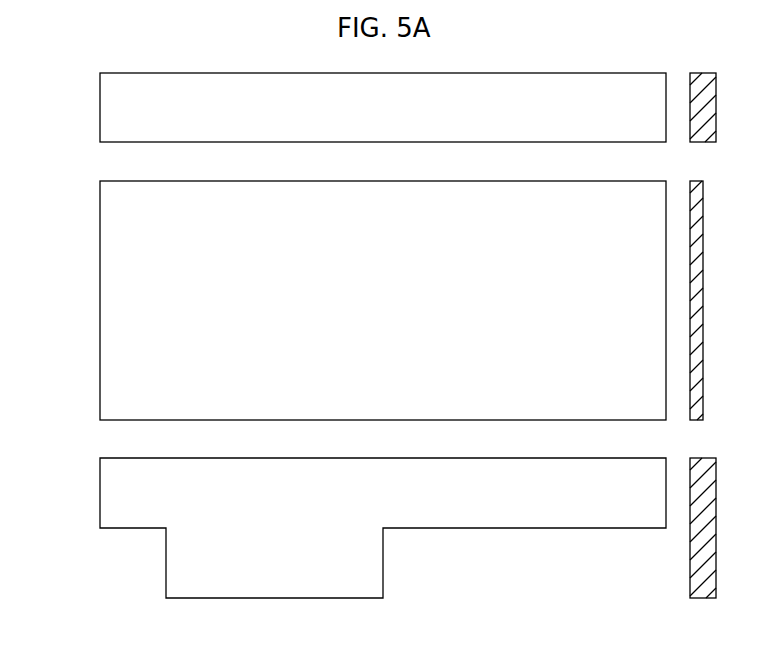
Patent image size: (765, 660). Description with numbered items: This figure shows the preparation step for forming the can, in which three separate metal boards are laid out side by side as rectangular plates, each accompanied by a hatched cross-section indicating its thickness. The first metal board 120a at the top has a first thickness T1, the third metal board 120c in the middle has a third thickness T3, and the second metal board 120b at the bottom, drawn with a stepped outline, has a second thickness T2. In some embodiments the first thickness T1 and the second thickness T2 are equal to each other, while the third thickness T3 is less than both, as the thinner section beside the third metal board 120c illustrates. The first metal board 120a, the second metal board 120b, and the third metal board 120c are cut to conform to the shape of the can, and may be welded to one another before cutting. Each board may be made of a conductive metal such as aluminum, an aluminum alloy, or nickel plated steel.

The first metal board 120a is at (108, 108).
The third metal board 120c is at (110, 314).
The second metal board 120b is at (108, 495).
The first thickness T1 is at (742, 157).
The third thickness T3 is at (730, 435).
The second thickness T2 is at (742, 615).